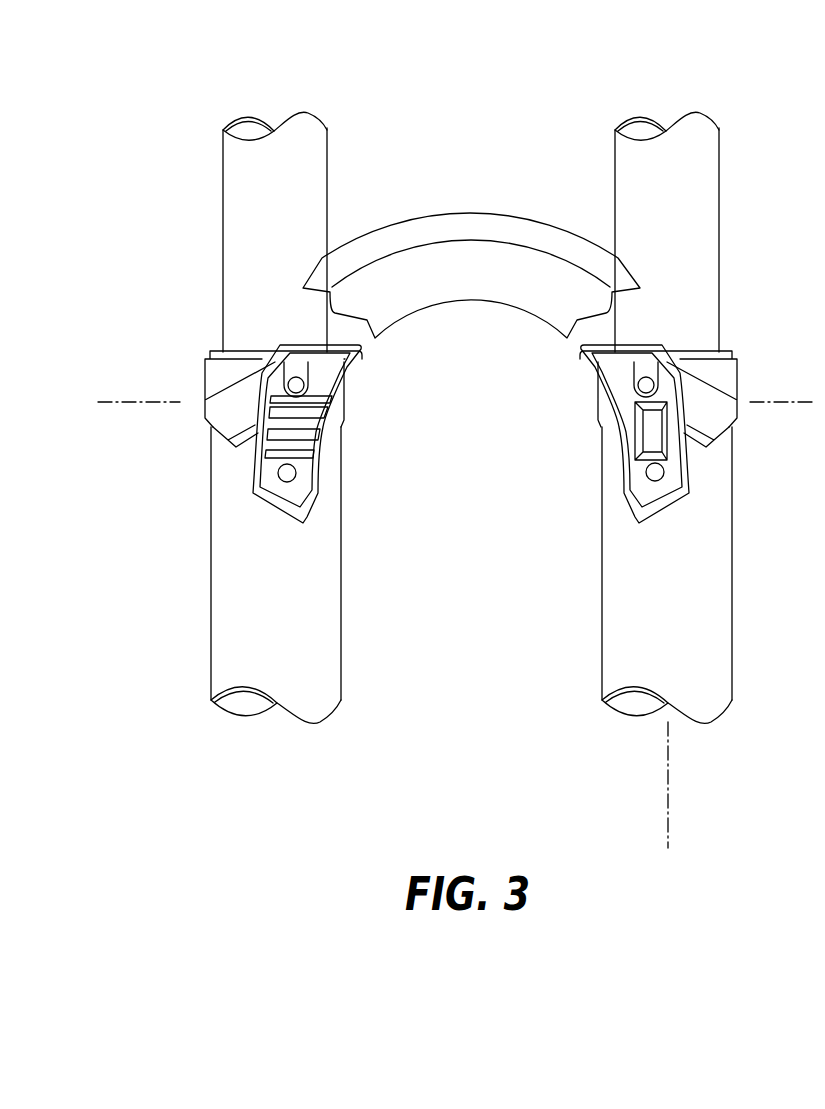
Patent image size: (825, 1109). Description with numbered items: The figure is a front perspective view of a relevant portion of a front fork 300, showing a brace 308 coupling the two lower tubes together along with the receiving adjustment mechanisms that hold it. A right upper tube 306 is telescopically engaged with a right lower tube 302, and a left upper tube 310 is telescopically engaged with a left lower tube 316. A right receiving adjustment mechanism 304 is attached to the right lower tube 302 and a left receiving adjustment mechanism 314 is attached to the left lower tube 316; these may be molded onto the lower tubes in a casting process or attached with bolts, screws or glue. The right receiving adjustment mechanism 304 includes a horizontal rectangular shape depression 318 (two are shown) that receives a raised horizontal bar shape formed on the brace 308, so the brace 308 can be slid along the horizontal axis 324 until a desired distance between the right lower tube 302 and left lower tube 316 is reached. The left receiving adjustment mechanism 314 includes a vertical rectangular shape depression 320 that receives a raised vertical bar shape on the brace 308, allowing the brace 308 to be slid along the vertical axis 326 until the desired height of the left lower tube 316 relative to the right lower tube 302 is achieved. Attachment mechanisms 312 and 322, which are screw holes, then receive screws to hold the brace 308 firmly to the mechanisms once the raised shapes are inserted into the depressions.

The front fork 300 is at (188, 110).
The right lower tube 302 is at (212, 697).
The right receiving adjustment mechanism 304 is at (281, 434).
The right upper tube 306 is at (223, 240).
The brace 308 is at (470, 228).
The left upper tube 310 is at (720, 160).
The attachment mechanism 312 is at (305, 380).
The left receiving adjustment mechanism 314 is at (661, 434).
The left lower tube 316 is at (732, 693).
The horizontal rectangular shape depression 318 is at (297, 445).
The vertical rectangular shape depression 320 is at (660, 428).
The attachment mechanism 322 is at (640, 385).
The horizontal axis 324 is at (127, 402).
The vertical axis 326 is at (668, 797).